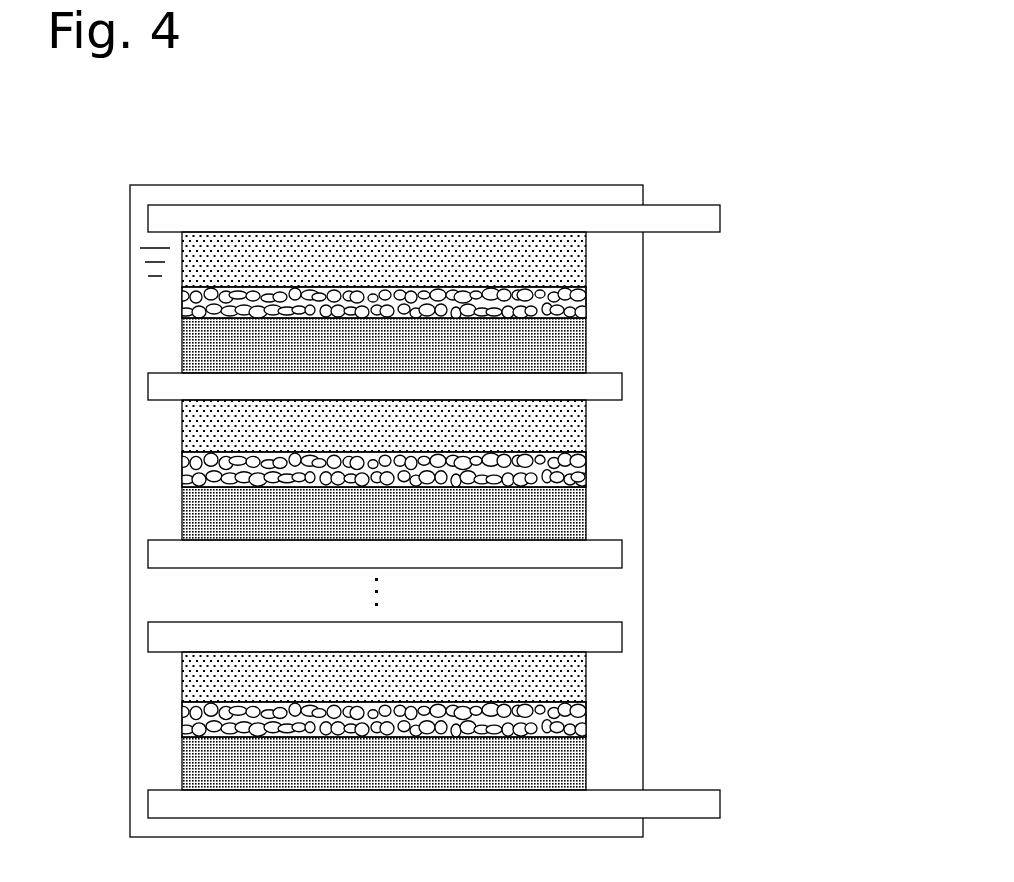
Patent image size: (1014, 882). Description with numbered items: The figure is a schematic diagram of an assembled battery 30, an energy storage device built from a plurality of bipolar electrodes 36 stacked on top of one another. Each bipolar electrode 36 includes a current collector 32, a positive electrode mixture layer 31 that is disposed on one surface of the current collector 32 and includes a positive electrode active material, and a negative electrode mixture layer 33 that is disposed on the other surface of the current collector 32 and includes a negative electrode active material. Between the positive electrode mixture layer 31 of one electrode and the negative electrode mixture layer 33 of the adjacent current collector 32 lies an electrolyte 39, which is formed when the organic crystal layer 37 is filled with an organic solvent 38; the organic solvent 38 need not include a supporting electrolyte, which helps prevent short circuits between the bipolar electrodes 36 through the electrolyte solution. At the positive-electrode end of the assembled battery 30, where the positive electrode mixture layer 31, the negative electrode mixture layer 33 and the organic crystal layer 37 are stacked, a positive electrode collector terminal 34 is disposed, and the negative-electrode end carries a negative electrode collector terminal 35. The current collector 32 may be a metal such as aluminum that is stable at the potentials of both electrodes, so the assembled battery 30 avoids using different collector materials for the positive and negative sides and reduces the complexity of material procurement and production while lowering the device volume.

The assembled battery 30 is at (773, 168).
The positive electrode mixture layer 31 is at (586, 262).
The current collector 32 is at (622, 388).
The negative electrode mixture layer 33 is at (586, 347).
The positive electrode collector terminal 34 is at (720, 216).
The negative electrode collector terminal 35 is at (720, 805).
The bipolar electrode 36 is at (810, 322).
The organic crystal layer 37 is at (586, 300).
The organic solvent 38 is at (587, 478).
The electrolyte 39 is at (810, 442).